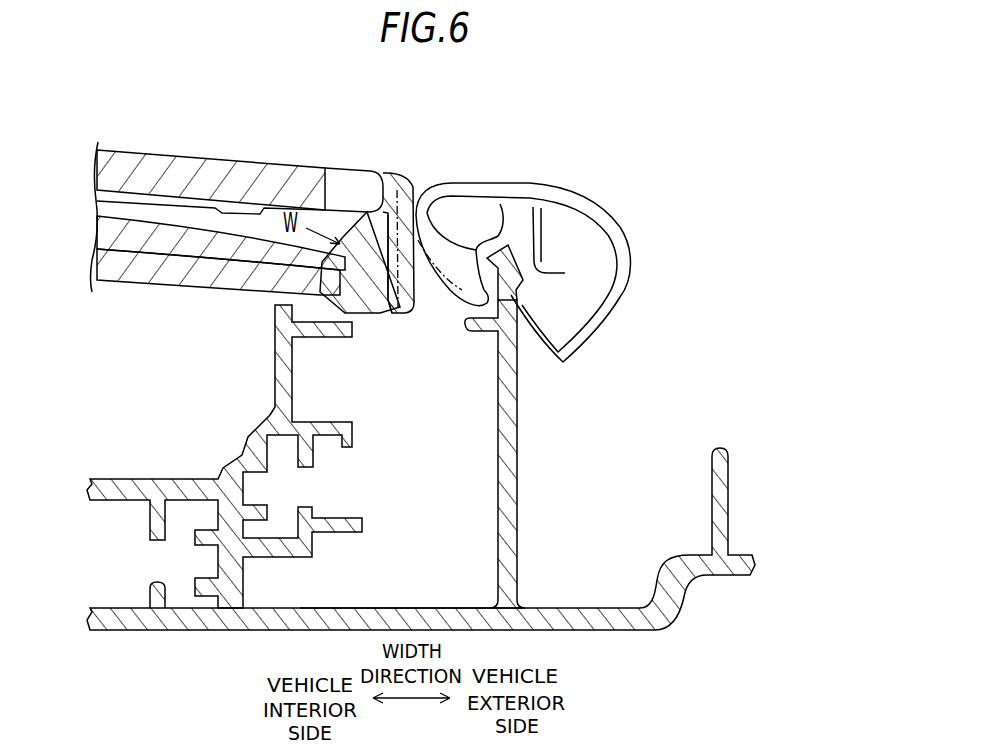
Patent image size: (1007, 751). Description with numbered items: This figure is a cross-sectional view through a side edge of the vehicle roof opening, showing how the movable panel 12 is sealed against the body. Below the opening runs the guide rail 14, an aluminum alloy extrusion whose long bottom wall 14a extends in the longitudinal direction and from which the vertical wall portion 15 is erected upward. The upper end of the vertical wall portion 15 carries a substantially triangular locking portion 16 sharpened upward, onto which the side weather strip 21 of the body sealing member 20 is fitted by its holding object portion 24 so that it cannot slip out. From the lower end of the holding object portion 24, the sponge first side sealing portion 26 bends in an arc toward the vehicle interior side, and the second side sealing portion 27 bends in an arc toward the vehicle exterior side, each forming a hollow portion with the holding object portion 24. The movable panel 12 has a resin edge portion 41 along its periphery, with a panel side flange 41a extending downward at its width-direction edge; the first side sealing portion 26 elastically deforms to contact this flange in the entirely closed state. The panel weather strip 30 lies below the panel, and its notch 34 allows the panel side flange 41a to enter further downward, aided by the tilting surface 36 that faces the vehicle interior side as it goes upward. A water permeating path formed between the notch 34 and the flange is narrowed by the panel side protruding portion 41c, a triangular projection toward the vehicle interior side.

The movable panel 12 is at (173, 165).
The panel weather strip 30 is at (199, 298).
The tilting surface 36 is at (325, 206).
The notch 34 is at (377, 323).
The edge portion 41 is at (403, 178).
The panel side flange 41a is at (415, 288).
The panel side protruding portion 41c is at (395, 316).
The body sealing member 20 is at (523, 237).
The side weather strip 21 is at (493, 180).
The holding object portion 24 is at (565, 273).
The first side sealing portion 26 is at (437, 178).
The second side sealing portion 27 is at (562, 183).
The locking portion 16 is at (494, 250).
The vertical wall portion 15 is at (497, 408).
The guide rail 14 is at (590, 601).
The bottom wall 14a is at (408, 607).